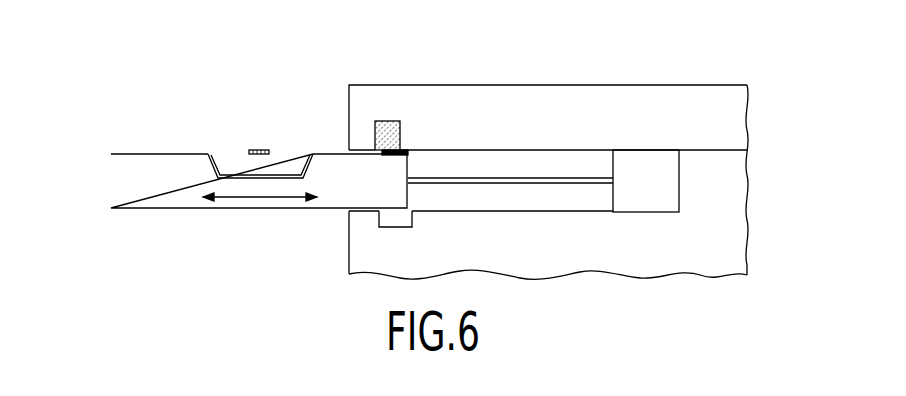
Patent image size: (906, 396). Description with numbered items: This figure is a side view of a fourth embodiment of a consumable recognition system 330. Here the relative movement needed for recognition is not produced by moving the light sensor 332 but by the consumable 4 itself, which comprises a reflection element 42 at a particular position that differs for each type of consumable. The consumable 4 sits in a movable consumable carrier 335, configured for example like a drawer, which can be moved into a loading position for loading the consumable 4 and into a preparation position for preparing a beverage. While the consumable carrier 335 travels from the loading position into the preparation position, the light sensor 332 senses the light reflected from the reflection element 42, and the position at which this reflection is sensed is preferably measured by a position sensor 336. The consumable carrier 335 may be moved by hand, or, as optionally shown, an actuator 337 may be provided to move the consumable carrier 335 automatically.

The consumable 4 is at (218, 155).
The reflection element 42 is at (258, 150).
The consumable recognition system 330 is at (388, 106).
The light sensor 332 is at (375, 131).
The consumable carrier 335 is at (111, 191).
The position sensor 336 is at (378, 218).
The actuator 337 is at (679, 188).